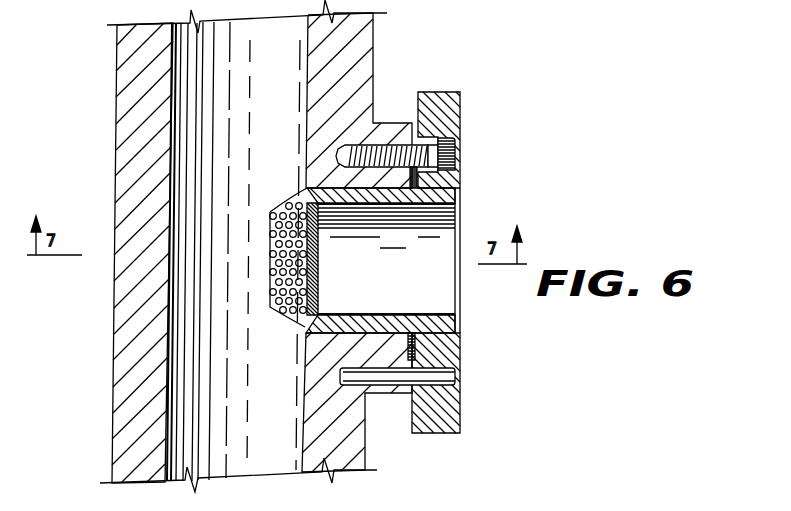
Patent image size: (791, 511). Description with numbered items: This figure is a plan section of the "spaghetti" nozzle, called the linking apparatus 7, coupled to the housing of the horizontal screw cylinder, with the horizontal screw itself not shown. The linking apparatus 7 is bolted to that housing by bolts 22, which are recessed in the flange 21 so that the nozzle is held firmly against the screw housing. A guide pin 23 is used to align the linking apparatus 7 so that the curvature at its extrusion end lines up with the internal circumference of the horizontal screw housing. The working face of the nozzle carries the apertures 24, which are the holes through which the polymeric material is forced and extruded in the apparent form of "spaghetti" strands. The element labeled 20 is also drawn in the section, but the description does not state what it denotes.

The wall 20 is at (128, 128).
The flange 21 is at (452, 103).
The bolts 22 is at (460, 147).
The linking apparatus 7 is at (393, 198).
The guide pin 23 is at (443, 378).
The apertures 24 is at (318, 250).